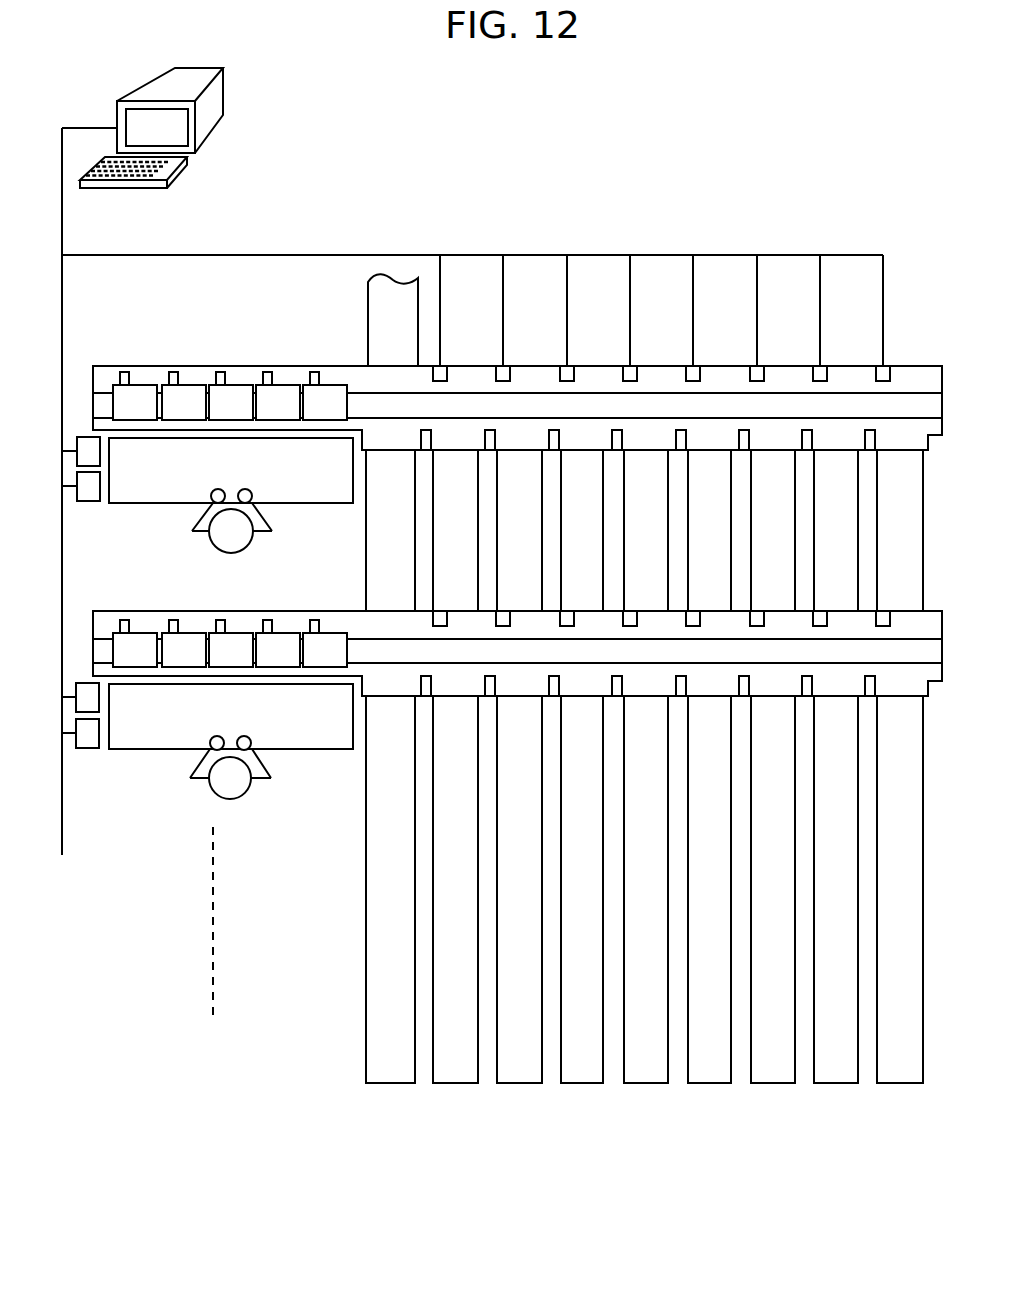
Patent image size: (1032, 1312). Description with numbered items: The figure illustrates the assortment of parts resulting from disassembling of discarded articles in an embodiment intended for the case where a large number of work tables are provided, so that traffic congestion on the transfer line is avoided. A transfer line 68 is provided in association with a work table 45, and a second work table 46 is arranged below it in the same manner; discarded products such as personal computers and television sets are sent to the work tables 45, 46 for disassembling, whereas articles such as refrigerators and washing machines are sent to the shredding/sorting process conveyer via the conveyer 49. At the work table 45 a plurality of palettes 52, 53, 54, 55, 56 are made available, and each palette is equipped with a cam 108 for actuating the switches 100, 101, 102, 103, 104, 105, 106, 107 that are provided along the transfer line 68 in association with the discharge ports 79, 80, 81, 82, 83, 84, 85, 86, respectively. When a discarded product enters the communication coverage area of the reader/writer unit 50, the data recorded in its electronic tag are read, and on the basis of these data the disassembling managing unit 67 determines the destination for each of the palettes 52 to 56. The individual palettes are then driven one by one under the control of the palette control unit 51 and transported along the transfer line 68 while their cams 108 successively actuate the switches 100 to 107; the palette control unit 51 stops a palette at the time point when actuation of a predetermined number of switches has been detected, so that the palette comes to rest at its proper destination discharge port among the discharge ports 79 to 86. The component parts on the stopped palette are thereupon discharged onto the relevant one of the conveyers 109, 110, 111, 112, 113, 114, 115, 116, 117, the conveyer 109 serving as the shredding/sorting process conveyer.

The disassembling managing unit 67 is at (220, 100).
The cam 108 is at (120, 371).
The palette 52 is at (140, 398).
The palette 53 is at (185, 398).
The palette 54 is at (232, 398).
The palette 55 is at (277, 398).
The palette 56 is at (324, 398).
The transfer line 68 is at (905, 387).
The switch 100 is at (452, 362).
The switch 101 is at (515, 362).
The switch 102 is at (579, 362).
The switch 103 is at (642, 362).
The switch 104 is at (705, 362).
The switch 105 is at (769, 362).
The switch 106 is at (832, 362).
The switch 107 is at (893, 360).
The conveyer 49 is at (398, 440).
The discharge port 86 is at (463, 440).
The discharge port 85 is at (527, 440).
The discharge port 84 is at (590, 440).
The discharge port 83 is at (654, 440).
The discharge port 82 is at (717, 440).
The discharge port 81 is at (781, 440).
The discharge port 80 is at (844, 440).
The discharge port 79 is at (908, 440).
The reader/writer unit 50 is at (88, 452).
The palette control unit 51 is at (88, 487).
The work table 45 is at (322, 490).
The work table 46 is at (322, 736).
The conveyer 109 is at (394, 1074).
The conveyer 110 is at (459, 1074).
The conveyer 111 is at (523, 1074).
The conveyer 112 is at (586, 1074).
The conveyer 113 is at (650, 1074).
The conveyer 114 is at (713, 1074).
The conveyer 115 is at (777, 1074).
The conveyer 116 is at (840, 1074).
The conveyer 117 is at (904, 1074).